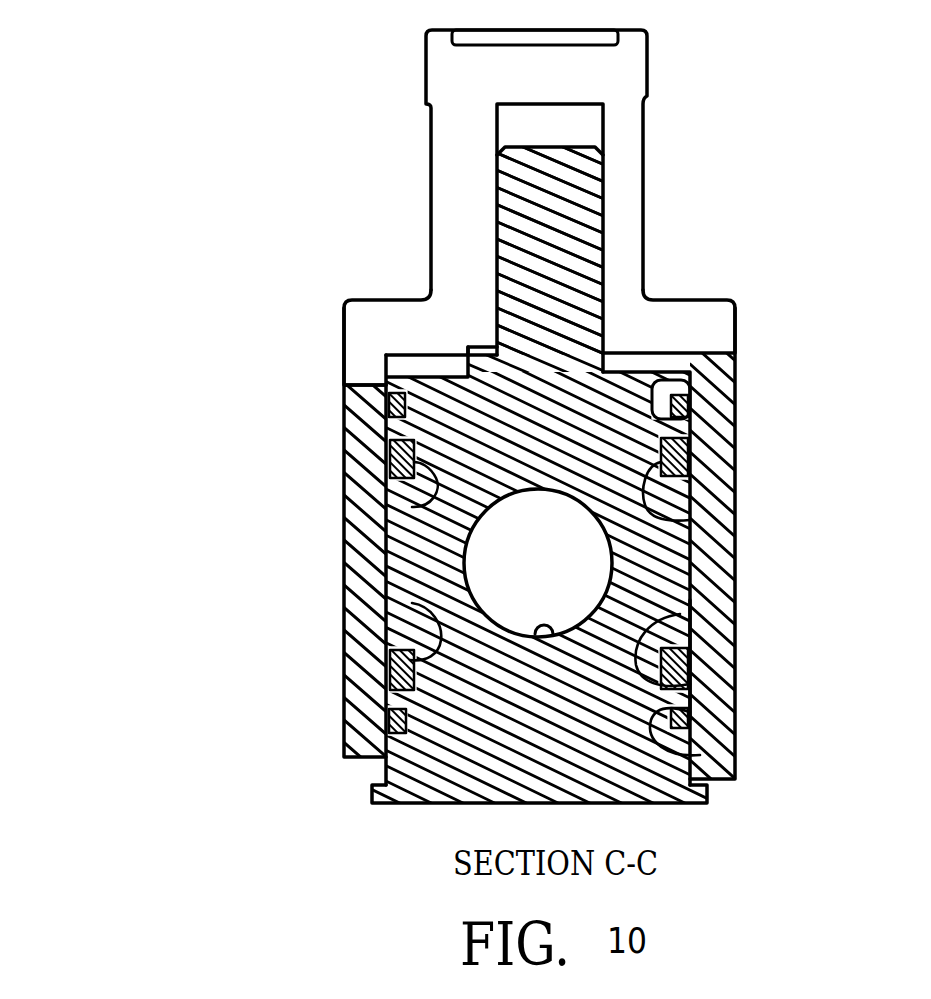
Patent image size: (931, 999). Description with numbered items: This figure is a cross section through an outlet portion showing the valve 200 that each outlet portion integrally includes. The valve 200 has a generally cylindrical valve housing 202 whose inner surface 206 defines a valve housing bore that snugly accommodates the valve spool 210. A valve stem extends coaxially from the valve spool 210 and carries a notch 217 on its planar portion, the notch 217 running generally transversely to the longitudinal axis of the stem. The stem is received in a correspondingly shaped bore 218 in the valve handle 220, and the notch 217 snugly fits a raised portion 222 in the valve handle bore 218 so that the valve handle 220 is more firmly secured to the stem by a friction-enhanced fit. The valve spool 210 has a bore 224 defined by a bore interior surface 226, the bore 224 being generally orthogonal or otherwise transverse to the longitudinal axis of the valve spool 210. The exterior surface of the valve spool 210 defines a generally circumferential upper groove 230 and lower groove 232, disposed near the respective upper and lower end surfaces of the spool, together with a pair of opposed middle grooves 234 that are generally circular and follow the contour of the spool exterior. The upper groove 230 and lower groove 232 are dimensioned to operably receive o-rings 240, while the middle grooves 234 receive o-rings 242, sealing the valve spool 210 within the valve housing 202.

The valve 200 is at (757, 468).
The valve housing 202 is at (344, 675).
The inner surface 206 is at (692, 662).
The valve spool 210 is at (410, 805).
The notch 217 is at (505, 198).
The bore 218 is at (604, 273).
The valve handle 220 is at (427, 197).
The raised portion 222 is at (505, 198).
The bore 224 is at (538, 563).
The bore interior surface 226 is at (552, 640).
The upper groove 230 is at (672, 378).
The lower groove 232 is at (700, 755).
The middle grooves 234 is at (680, 614).
The o-rings 240 is at (390, 728).
The o-rings 242 is at (688, 692).